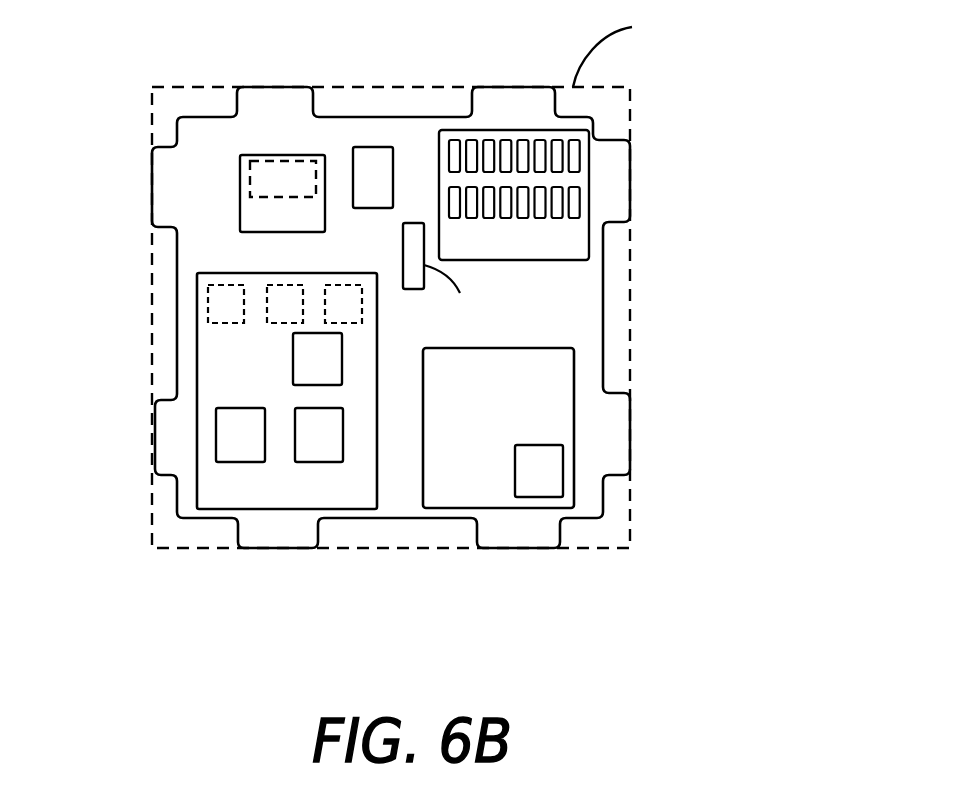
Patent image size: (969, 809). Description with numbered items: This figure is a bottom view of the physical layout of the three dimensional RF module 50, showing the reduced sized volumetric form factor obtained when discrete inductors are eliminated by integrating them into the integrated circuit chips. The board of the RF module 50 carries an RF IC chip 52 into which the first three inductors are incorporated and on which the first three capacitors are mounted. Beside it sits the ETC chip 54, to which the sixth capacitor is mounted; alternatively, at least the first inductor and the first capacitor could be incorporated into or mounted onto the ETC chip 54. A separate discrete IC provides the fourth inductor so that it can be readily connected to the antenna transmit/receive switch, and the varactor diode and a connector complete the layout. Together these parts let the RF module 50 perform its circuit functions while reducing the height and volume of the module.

The RF module 50 is at (63, 337).
The RF IC chip 52 is at (287, 391).
The ETC chip 54 is at (504, 475).